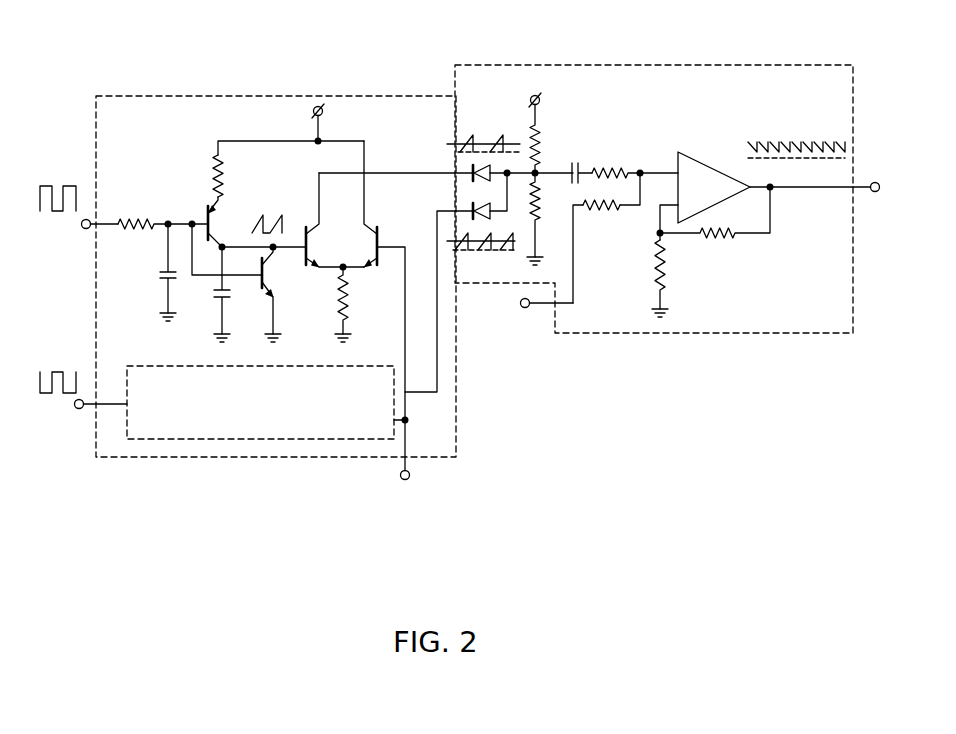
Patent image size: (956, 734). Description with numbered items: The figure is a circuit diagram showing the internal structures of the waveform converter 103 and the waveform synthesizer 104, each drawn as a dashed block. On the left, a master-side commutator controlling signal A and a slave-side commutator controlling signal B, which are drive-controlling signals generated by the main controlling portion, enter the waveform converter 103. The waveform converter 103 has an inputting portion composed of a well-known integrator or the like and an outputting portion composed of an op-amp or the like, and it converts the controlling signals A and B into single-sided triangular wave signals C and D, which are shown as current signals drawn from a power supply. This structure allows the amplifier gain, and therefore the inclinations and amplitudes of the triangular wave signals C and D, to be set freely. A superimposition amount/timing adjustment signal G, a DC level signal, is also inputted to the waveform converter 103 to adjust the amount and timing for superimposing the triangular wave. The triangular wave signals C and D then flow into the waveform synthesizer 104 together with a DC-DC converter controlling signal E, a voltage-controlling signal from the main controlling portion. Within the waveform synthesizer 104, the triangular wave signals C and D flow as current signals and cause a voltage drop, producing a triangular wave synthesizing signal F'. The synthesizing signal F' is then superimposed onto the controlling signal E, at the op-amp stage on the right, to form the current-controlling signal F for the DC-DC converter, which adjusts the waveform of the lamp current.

The waveform converter 103 is at (275, 96).
The waveform synthesizer 104 is at (653, 64).
The master-side commutator controlling signal A is at (69, 207).
The slave-side commutator controlling signal B is at (75, 390).
The triangular wave signal C is at (507, 158).
The triangular wave signal D is at (478, 225).
The DC-DC converter controlling signal E is at (538, 305).
The current-controlling signal F is at (815, 198).
The triangular wave synthesizing signal F' is at (544, 179).
The superimposition amount/timing adjustment signal G is at (416, 456).